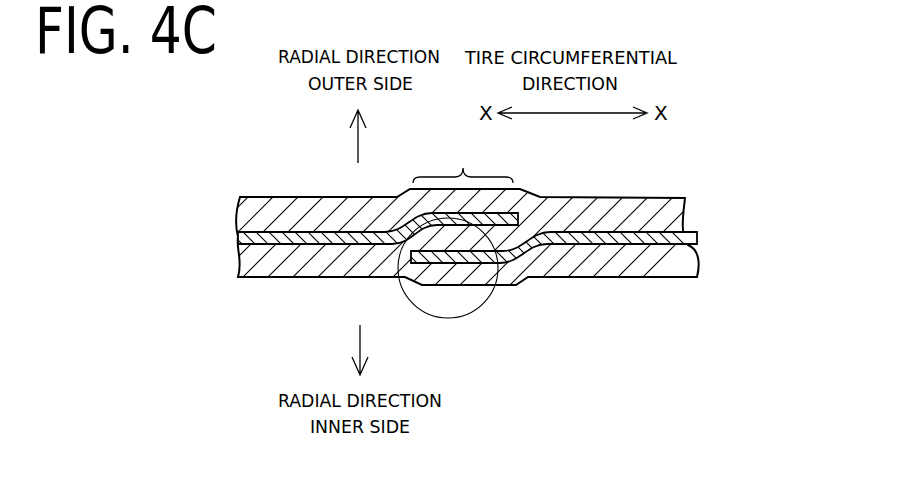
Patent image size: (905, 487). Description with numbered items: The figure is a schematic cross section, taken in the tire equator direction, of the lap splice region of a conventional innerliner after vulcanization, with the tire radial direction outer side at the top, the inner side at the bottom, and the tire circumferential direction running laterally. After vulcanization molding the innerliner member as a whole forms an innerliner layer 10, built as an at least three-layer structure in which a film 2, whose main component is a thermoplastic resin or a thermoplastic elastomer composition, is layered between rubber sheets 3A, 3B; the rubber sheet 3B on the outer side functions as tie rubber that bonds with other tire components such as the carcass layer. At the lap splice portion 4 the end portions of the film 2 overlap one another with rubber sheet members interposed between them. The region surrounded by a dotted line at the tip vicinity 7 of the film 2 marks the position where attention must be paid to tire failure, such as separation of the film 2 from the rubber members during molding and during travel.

The innerliner layer 10 is at (705, 202).
The film 2 is at (671, 242).
The rubber sheet 3A is at (279, 268).
The rubber sheet 3B is at (284, 203).
The lap splice portion 4 is at (463, 168).
The tip vicinity 7 is at (478, 308).